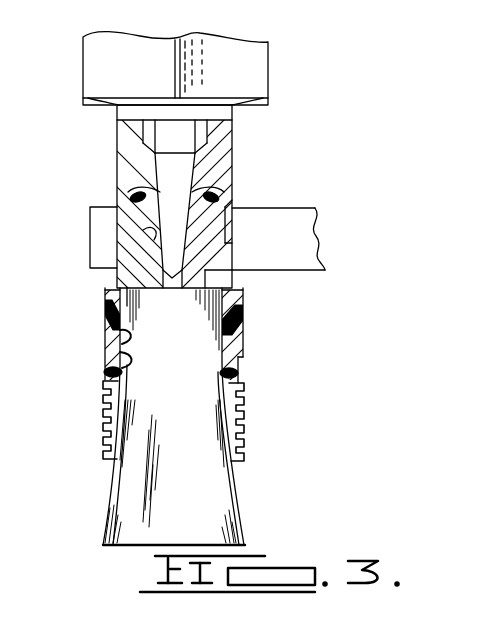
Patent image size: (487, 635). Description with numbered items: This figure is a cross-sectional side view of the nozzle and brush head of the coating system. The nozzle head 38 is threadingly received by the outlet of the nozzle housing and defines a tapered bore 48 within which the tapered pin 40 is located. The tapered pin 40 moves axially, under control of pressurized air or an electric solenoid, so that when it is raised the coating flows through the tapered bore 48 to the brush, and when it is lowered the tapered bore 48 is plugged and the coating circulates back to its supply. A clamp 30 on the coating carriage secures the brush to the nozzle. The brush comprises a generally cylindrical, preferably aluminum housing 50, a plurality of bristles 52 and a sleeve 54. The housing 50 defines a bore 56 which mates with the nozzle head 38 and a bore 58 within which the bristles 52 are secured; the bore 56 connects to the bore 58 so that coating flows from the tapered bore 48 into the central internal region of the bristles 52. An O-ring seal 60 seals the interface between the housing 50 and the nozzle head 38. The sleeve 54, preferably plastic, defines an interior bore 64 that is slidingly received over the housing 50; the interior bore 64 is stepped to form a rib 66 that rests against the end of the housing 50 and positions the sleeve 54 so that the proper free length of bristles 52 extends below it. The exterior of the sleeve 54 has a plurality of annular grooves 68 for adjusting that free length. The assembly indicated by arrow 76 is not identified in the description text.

The clamp 30 is at (303, 233).
The nozzle head 38 is at (218, 150).
The tapered pin 40 is at (166, 176).
The tapered bore 48 is at (166, 197).
The housing 50 is at (232, 208).
The bristles 52 is at (208, 492).
The sleeve 54 is at (245, 313).
The bore 56 is at (150, 237).
The bore 58 is at (120, 337).
The O-ring seal 60 is at (133, 197).
The interior bore 64 is at (243, 367).
The rib 66 is at (120, 372).
The annular grooves 68 is at (245, 397).
The nozzle assembly 76 is at (82, 394).